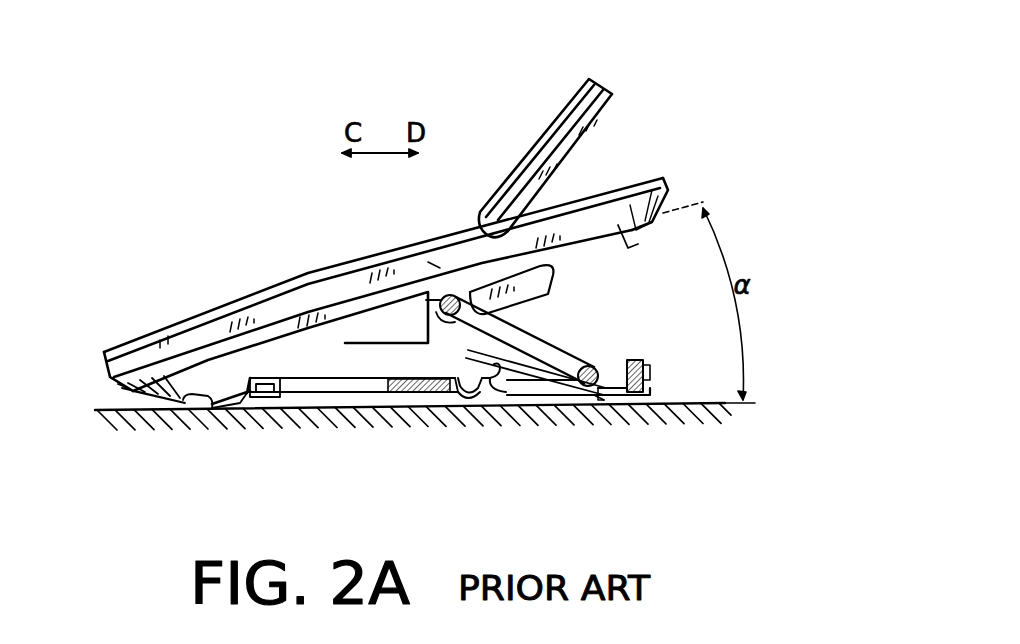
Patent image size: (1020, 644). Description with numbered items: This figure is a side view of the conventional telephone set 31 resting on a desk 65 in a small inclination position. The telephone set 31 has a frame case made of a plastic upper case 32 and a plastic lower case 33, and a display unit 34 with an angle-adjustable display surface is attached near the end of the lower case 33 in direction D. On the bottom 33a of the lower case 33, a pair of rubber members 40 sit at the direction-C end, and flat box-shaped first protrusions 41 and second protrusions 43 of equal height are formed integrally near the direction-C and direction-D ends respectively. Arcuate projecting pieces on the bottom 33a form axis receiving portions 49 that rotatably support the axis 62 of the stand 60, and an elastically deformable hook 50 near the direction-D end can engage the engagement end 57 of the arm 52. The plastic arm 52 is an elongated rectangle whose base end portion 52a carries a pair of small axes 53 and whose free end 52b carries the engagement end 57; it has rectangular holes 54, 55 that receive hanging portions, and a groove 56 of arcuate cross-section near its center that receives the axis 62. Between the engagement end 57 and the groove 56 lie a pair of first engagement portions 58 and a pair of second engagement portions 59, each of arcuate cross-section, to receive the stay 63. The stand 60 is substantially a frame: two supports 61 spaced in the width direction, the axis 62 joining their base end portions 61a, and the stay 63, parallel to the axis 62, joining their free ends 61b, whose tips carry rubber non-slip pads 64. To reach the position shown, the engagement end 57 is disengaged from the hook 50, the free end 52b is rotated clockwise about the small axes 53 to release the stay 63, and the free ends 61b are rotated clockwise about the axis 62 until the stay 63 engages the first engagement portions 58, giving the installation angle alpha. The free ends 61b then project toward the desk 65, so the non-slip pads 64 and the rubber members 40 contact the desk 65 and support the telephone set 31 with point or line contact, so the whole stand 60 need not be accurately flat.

The telephone set 31 is at (332, 190).
The upper case 32 is at (273, 287).
The lower case 33 is at (673, 195).
The bottom 33a is at (646, 226).
The display unit 34 is at (616, 96).
The rubber members 40 is at (214, 410).
The first protrusions 41 is at (262, 408).
The second protrusions 43 is at (554, 276).
The axis receiving portions 49 is at (424, 394).
The hook 50 is at (626, 254).
The arm 52 is at (400, 394).
The base end portion 52a is at (256, 382).
The free end 52b is at (658, 404).
The small axes 53 is at (287, 408).
The hole 54 is at (351, 386).
The hole 55 is at (560, 395).
The groove 56 is at (467, 396).
The engagement end 57 is at (650, 373).
The first engagement portions 58 is at (618, 374).
The second engagement portions 59 is at (492, 385).
The stand 60 is at (524, 332).
The supports 61 is at (520, 380).
The base end portions 61a is at (432, 262).
The free ends 61b is at (598, 400).
The axis 62 is at (448, 299).
The stay 63 is at (586, 368).
The non-slip pads 64 is at (616, 402).
The desk 65 is at (128, 406).